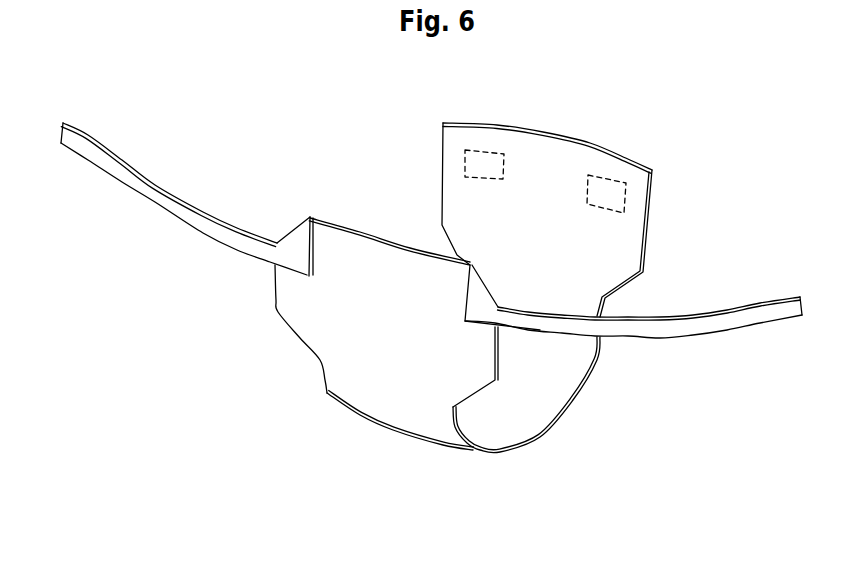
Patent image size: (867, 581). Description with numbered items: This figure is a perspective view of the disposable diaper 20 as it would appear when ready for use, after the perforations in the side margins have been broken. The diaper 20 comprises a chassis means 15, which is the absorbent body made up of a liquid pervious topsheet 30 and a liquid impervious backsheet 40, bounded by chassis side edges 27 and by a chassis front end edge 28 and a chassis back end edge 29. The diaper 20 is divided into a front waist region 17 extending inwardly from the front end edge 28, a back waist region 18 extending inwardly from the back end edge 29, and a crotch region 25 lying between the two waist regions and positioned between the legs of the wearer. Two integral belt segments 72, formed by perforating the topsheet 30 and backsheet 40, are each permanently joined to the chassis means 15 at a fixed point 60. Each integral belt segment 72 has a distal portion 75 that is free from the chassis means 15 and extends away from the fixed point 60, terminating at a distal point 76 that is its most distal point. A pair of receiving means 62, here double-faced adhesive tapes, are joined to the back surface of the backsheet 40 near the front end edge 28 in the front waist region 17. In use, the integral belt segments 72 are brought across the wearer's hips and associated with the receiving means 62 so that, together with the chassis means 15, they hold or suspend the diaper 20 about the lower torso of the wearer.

The chassis means 15 is at (395, 447).
The front waist region 17 is at (558, 183).
The back waist region 18 is at (375, 338).
The diaper 20 is at (368, 157).
The crotch region 25 is at (523, 383).
The chassis side edges 27 is at (533, 433).
The chassis front end edge 28 is at (547, 131).
The chassis back end edge 29 is at (351, 225).
The topsheet 30 is at (529, 245).
The backsheet 40 is at (367, 309).
The fixed point 60 is at (313, 216).
The receiving means 62 is at (490, 163).
The integral belt segments 72 is at (163, 211).
The distal portion 75 is at (152, 166).
The distal point 76 is at (59, 128).